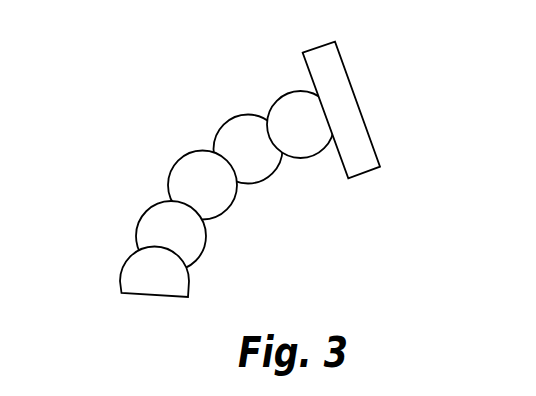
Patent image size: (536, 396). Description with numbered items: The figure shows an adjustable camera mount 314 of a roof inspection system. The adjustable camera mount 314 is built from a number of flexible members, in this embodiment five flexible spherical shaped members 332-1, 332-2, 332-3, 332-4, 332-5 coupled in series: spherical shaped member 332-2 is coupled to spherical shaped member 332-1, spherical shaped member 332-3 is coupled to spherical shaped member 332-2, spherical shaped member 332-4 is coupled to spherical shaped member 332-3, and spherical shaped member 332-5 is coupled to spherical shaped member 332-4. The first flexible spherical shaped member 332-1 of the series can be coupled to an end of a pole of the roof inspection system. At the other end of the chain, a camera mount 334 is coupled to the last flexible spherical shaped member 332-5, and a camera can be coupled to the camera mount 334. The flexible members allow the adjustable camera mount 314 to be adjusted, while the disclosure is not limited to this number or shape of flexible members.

The adjustable camera mount 314 is at (414, 44).
The spherical shaped member 332-1 is at (132, 272).
The spherical shaped member 332-2 is at (145, 218).
The spherical shaped member 332-3 is at (187, 166).
The spherical shaped member 332-4 is at (225, 132).
The spherical shaped member 332-5 is at (285, 101).
The camera mount 334 is at (345, 108).